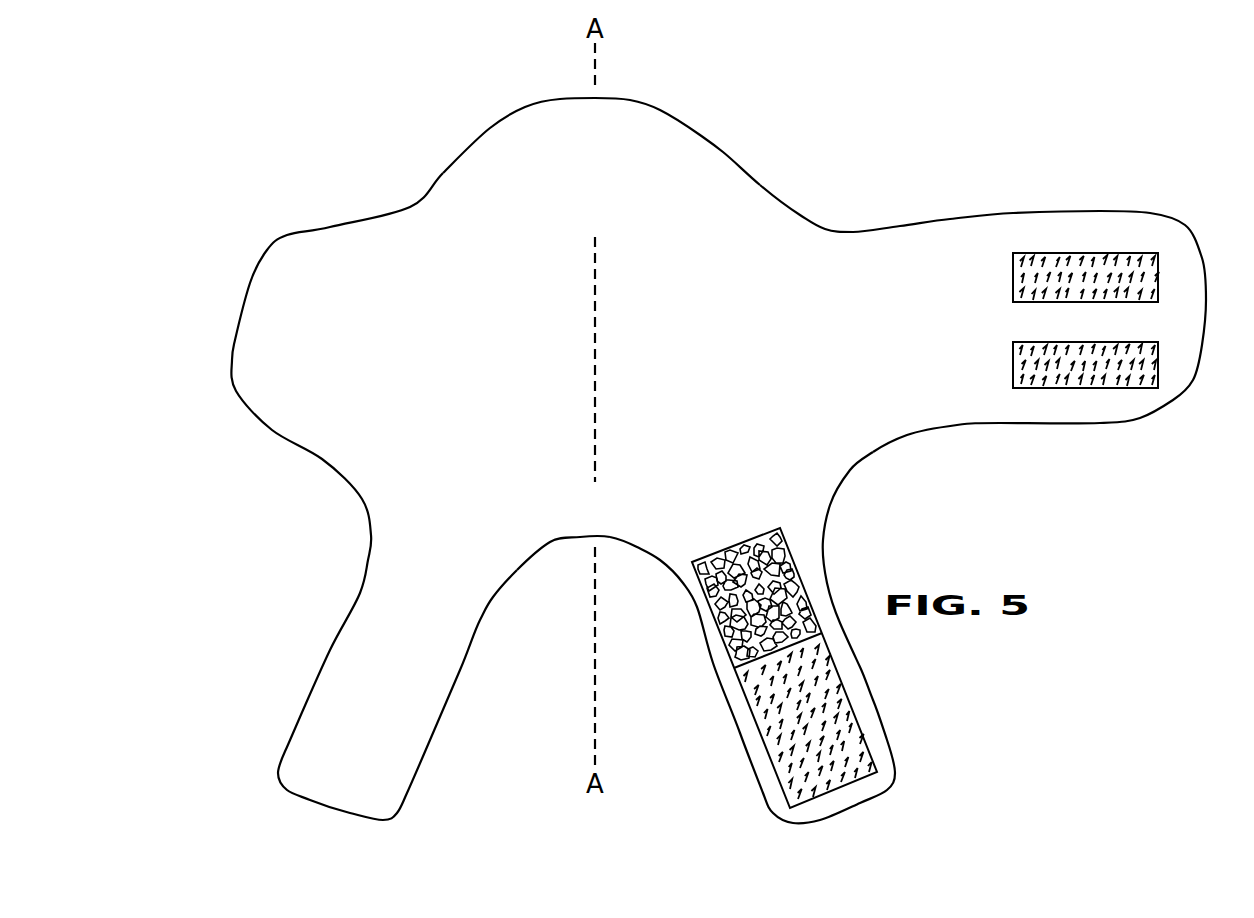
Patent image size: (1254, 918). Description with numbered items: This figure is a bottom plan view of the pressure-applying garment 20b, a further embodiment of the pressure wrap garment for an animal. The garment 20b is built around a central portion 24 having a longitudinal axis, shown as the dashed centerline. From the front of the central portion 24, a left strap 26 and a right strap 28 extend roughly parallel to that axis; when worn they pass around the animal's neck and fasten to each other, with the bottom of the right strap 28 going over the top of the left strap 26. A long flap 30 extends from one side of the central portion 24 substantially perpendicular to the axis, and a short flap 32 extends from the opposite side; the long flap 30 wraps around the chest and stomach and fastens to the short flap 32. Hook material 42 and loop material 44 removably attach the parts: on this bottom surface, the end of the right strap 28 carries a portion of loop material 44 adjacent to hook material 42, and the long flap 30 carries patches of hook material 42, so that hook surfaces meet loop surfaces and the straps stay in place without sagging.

The pressure-applying garment 20b is at (325, 166).
The central portion 24 is at (463, 185).
The left strap 26 is at (291, 757).
The right strap 28 is at (880, 787).
The long flap 30 is at (1107, 228).
The short flap 32 is at (253, 315).
The hook material 42 is at (1013, 263).
The loop material 44 is at (790, 577).